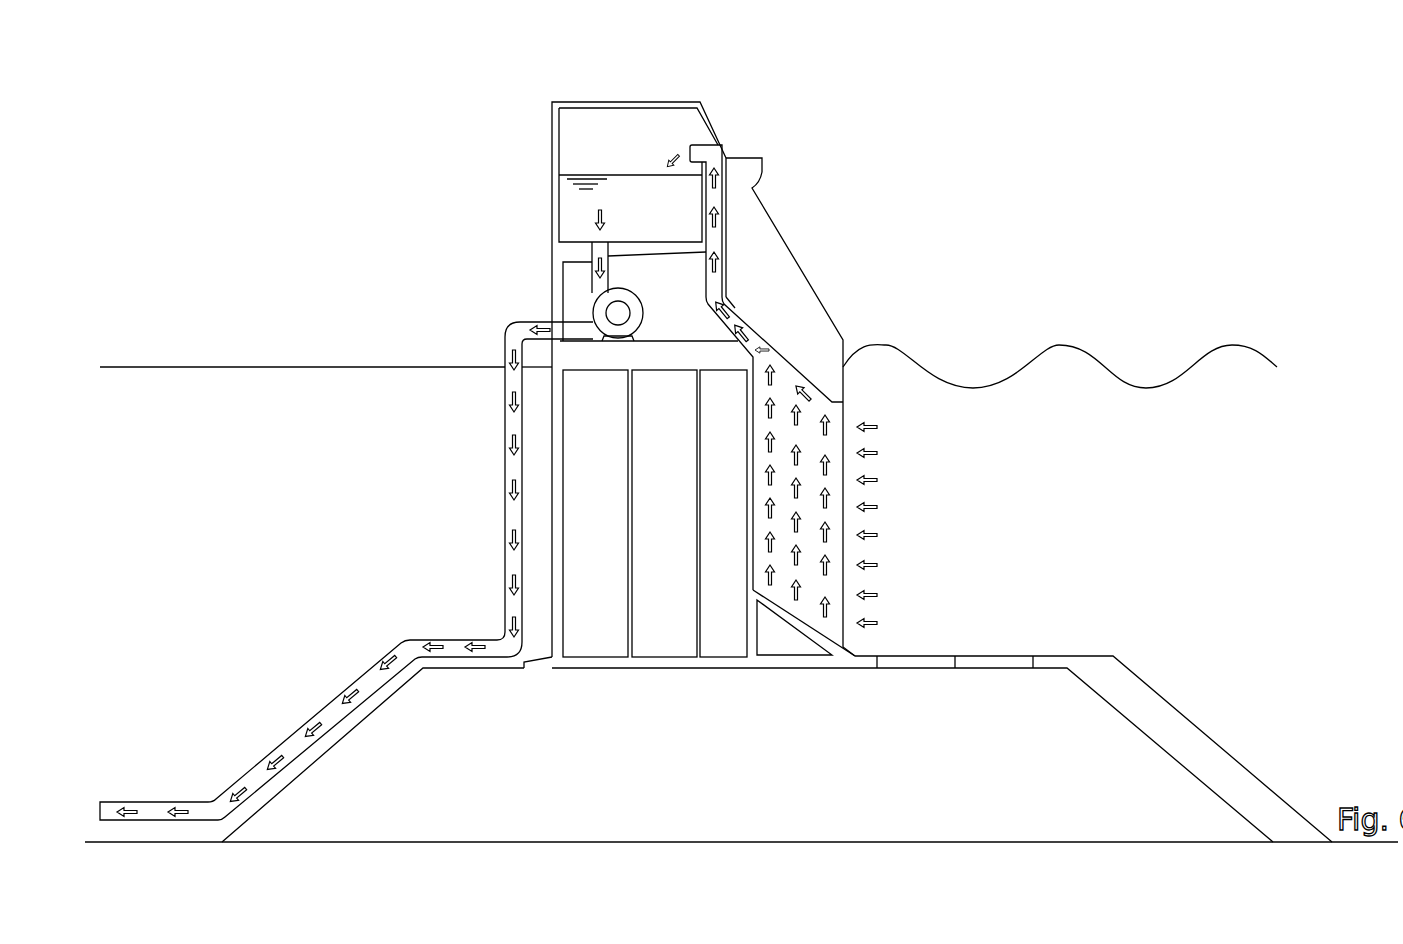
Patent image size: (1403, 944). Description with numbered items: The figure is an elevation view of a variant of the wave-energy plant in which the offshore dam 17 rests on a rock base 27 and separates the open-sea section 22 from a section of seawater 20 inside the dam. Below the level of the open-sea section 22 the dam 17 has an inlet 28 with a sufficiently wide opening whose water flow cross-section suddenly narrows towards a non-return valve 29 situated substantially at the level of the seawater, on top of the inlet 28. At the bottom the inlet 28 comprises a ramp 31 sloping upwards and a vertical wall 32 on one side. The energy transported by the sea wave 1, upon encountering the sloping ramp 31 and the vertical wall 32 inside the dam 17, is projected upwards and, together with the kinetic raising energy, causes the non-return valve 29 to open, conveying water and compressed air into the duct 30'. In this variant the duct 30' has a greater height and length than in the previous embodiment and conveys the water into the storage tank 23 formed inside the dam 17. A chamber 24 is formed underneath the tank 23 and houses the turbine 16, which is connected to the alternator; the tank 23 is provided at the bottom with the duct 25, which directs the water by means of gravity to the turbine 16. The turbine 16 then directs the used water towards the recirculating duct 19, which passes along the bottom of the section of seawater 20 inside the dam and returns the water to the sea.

The sea wave 1 is at (1132, 365).
The turbine 16 is at (638, 308).
The offshore dam 17 is at (765, 243).
The recirculating duct 19 is at (370, 678).
The section of seawater 20 is at (435, 378).
The open-sea section 22 is at (1067, 378).
The tank 23 is at (575, 135).
The chamber 24 is at (575, 280).
The duct 25 is at (600, 262).
The rock base 27 is at (1095, 737).
The inlet 28 is at (843, 416).
The non-return valve 29 is at (767, 352).
The duct 30' is at (750, 203).
The ramp 31 is at (805, 623).
The vertical wall 32 is at (742, 512).